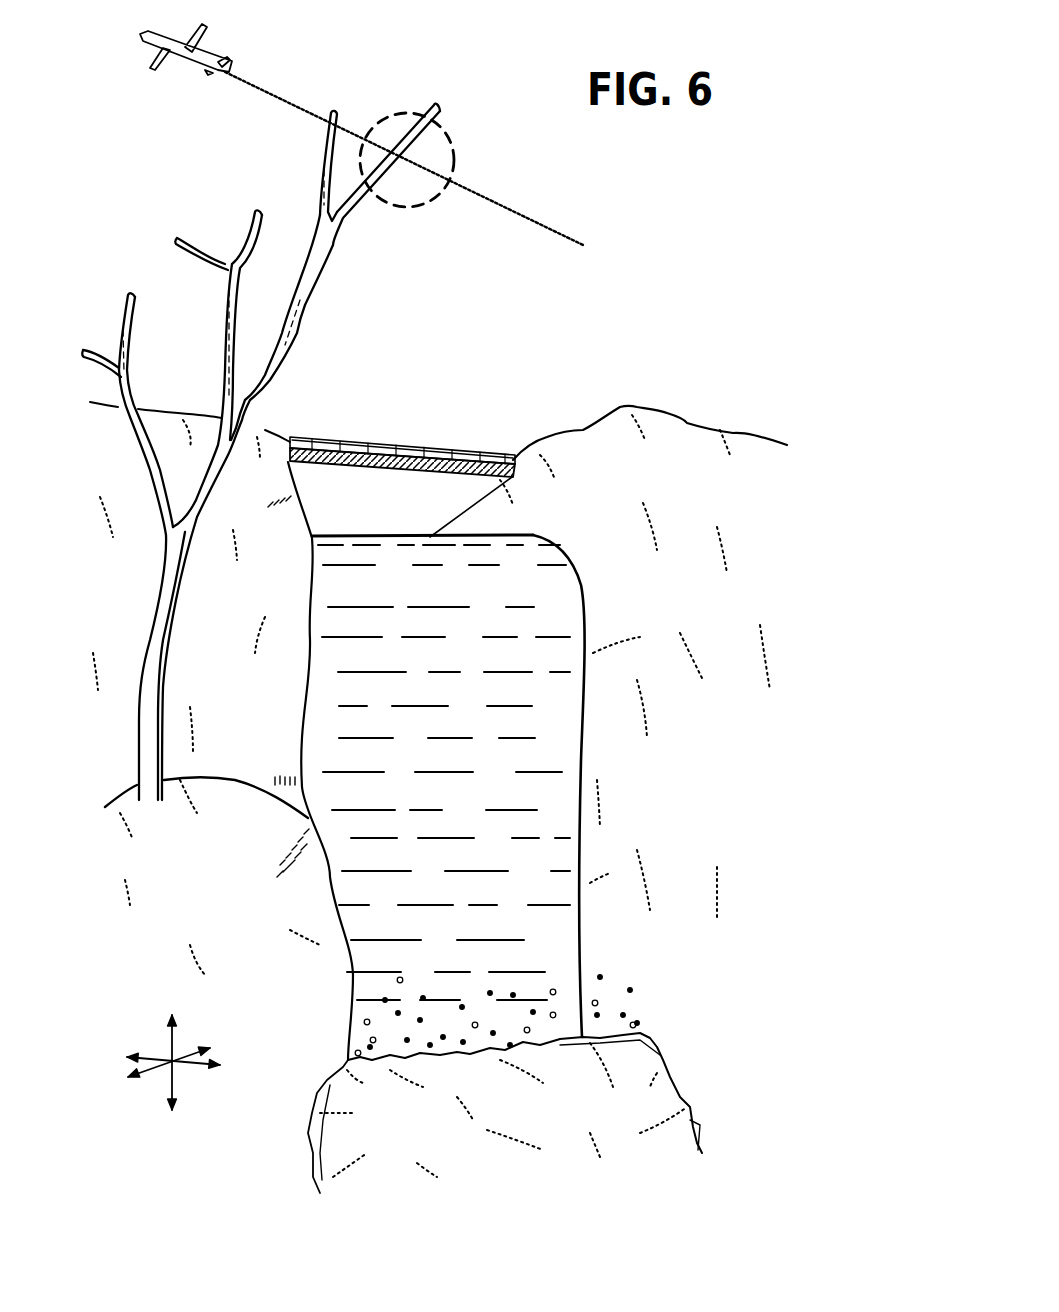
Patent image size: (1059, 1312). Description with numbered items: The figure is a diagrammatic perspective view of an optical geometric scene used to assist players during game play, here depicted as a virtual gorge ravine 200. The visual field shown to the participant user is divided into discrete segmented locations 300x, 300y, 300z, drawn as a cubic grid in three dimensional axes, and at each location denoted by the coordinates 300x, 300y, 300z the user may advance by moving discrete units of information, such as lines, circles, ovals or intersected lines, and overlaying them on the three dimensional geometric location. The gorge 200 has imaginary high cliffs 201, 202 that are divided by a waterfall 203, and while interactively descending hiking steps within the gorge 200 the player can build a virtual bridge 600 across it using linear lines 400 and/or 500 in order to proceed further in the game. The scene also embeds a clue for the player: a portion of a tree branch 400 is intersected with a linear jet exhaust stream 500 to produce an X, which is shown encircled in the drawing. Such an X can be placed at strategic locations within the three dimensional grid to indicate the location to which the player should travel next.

The gorge ravine 200 is at (668, 1030).
The high cliff 201 is at (250, 447).
The high cliff 202 is at (605, 442).
The waterfall 203 is at (586, 561).
The linear line 400 is at (368, 207).
The linear line 500 is at (303, 100).
The virtual bridge 600 is at (400, 435).
The discrete segmented location 300x is at (143, 1080).
The discrete segmented location 300y is at (202, 1048).
The discrete segmented location 300z is at (171, 1046).
The element X is at (452, 145).